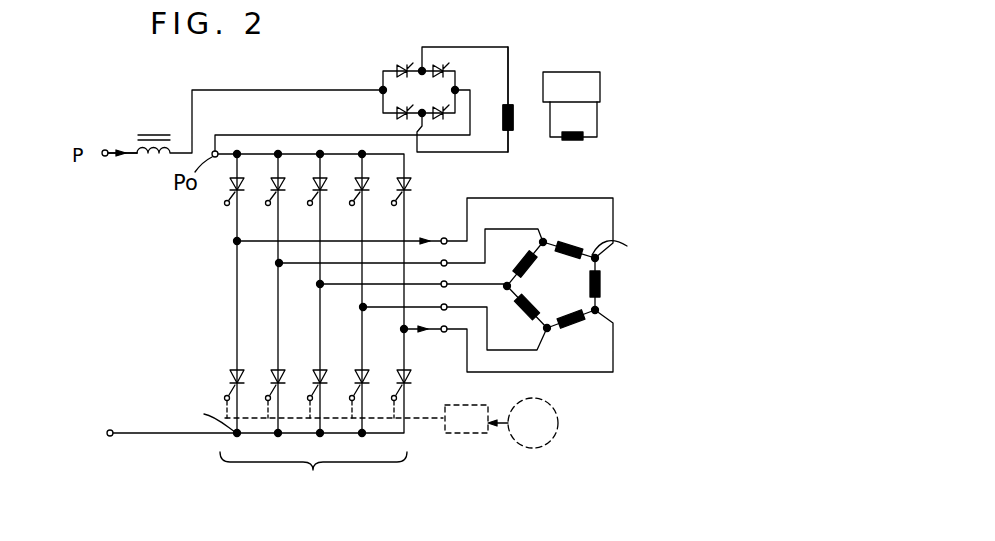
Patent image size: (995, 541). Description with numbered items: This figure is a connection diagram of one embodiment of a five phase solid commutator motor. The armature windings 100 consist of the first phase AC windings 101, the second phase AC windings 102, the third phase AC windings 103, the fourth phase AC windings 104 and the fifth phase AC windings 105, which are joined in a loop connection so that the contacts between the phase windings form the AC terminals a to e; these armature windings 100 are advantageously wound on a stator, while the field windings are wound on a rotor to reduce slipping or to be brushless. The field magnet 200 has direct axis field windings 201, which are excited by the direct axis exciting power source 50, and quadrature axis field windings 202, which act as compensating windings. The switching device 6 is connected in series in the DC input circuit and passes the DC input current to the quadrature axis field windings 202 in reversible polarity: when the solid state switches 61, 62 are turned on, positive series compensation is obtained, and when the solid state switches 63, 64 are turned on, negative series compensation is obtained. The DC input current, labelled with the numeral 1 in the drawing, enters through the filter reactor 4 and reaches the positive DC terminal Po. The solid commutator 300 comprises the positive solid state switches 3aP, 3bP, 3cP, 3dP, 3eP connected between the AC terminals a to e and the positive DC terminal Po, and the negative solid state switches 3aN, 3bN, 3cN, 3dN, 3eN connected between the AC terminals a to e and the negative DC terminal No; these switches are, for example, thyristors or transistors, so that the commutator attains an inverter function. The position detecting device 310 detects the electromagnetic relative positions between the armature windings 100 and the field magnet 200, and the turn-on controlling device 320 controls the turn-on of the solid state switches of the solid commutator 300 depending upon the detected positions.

The input current 1 is at (122, 166).
The filter reactor 4 is at (150, 157).
The switching device 6 is at (428, 104).
The solid state switch 61 is at (401, 68).
The solid state switch 62 is at (437, 120).
The solid state switch 63 is at (400, 113).
The solid state switch 64 is at (437, 67).
The direct axis exciting power source 50 is at (594, 124).
The direct axis field windings 201 is at (575, 141).
The quadrature axis field windings 202 is at (514, 118).
The field magnet 200 is at (569, 196).
The solid commutator 300 is at (269, 328).
The positive solid state switch 3aP is at (229, 181).
The positive solid state switch 3bP is at (270, 181).
The positive solid state switch 3cP is at (312, 181).
The positive solid state switch 3dP is at (354, 181).
The positive solid state switch 3eP is at (396, 181).
The negative solid state switch 3aN is at (233, 383).
The negative solid state switch 3bN is at (274, 383).
The negative solid state switch 3cN is at (316, 383).
The negative solid state switch 3dN is at (358, 383).
The negative solid state switch 3eN is at (400, 383).
The armature windings 100 is at (559, 285).
The first phase AC windings 101 is at (568, 243).
The second phase AC windings 102 is at (507, 240).
The third phase AC windings 103 is at (522, 313).
The fourth phase AC windings 104 is at (575, 328).
The fifth phase AC windings 105 is at (601, 288).
The position detecting device 310 is at (616, 434).
The turn-on controlling device 320 is at (498, 479).